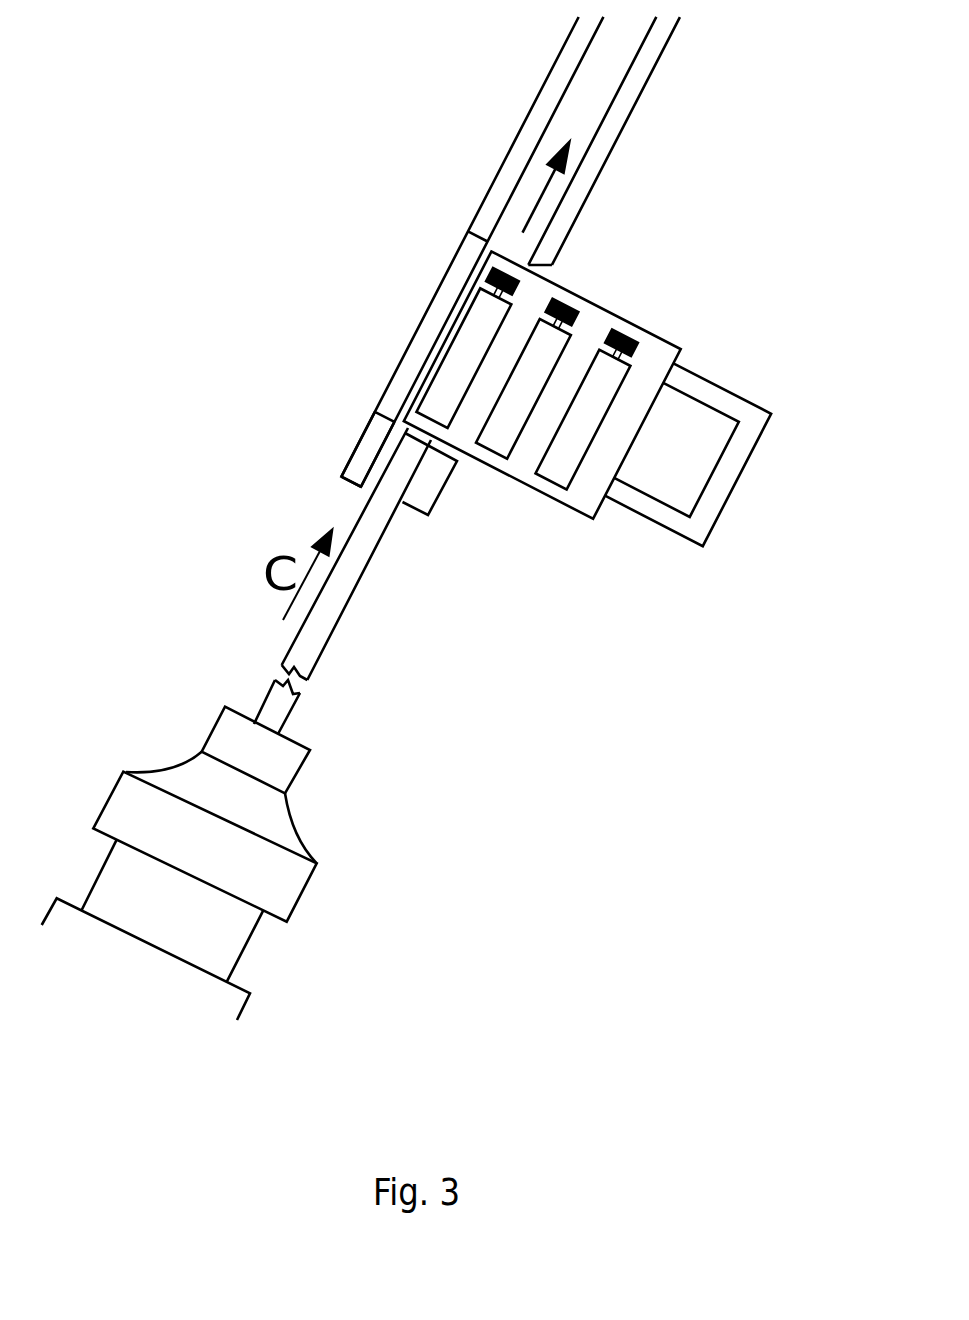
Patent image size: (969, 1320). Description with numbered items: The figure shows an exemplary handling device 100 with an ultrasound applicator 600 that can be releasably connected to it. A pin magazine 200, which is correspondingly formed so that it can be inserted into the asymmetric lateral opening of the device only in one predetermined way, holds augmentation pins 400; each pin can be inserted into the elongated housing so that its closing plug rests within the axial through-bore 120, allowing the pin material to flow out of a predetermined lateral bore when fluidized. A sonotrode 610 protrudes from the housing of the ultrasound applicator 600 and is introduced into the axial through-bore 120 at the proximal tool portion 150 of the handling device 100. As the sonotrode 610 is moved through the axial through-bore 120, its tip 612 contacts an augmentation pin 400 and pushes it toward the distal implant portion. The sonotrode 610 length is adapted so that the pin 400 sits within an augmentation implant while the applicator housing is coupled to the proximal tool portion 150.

The handling device 100 is at (457, 180).
The axial through-bore 120 is at (617, 67).
The proximal tool portion 150 is at (352, 452).
The pin magazine 200 is at (721, 336).
The augmentation pin 400 is at (470, 348).
The ultrasound applicator 600 is at (174, 738).
The sonotrode 610 is at (378, 548).
The tip 612 is at (413, 448).